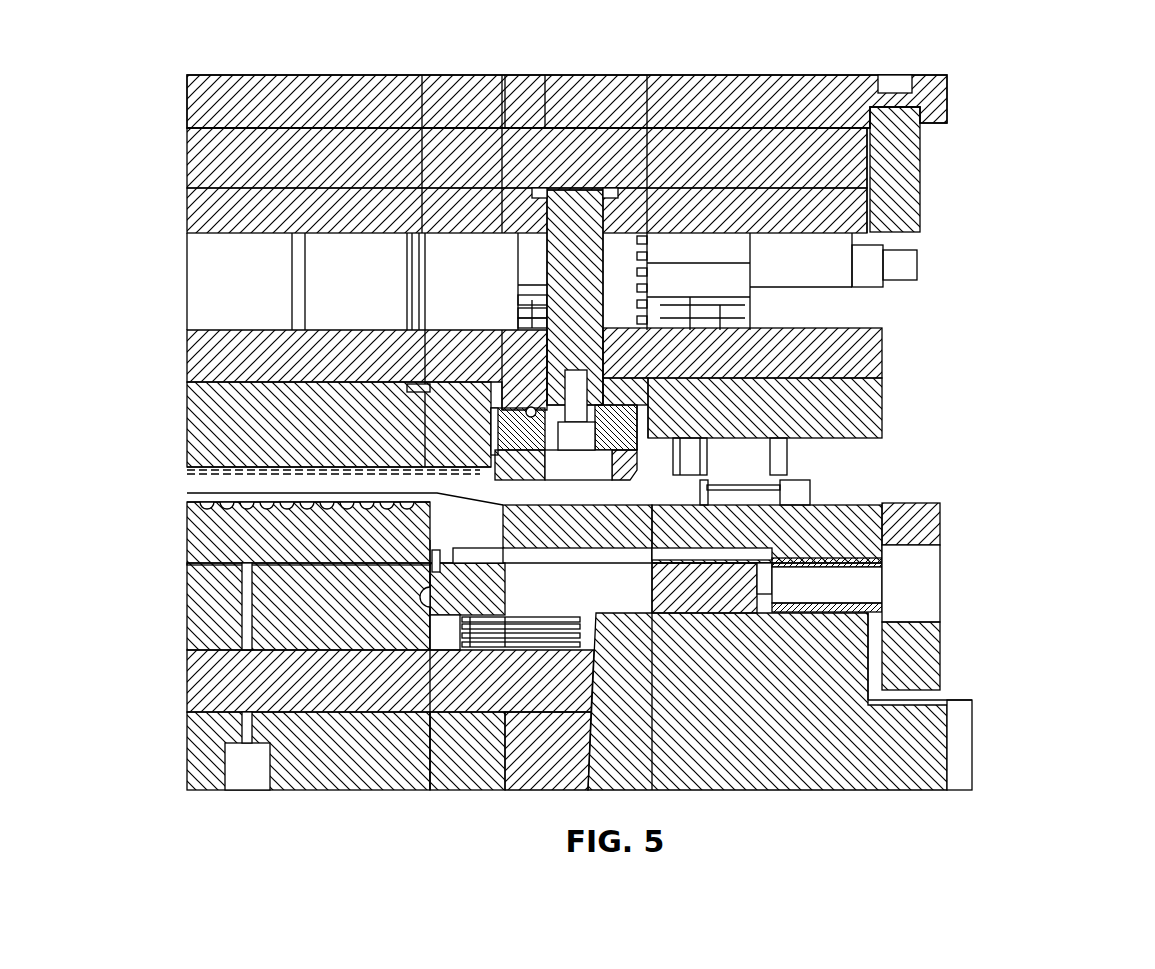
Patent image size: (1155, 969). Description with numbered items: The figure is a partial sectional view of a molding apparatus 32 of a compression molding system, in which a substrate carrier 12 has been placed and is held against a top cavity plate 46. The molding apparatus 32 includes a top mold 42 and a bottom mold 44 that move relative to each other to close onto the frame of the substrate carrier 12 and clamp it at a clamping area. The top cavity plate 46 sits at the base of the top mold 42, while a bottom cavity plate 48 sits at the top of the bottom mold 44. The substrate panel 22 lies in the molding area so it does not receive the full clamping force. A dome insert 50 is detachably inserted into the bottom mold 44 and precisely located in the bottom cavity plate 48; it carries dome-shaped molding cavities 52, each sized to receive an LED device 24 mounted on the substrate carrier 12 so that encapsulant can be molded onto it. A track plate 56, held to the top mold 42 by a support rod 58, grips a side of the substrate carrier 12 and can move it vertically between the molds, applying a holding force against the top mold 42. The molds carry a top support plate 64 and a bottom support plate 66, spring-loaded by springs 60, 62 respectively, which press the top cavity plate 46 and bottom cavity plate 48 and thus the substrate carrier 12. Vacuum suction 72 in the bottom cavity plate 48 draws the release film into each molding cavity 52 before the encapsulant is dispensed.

The molding apparatus 32 is at (601, 423).
The top mold 42 is at (592, 290).
The bottom mold 44 is at (602, 674).
The support rod 58 is at (603, 250).
The spring 60 is at (524, 299).
The top support plate 64 is at (848, 340).
The top cavity plate 46 is at (873, 403).
The track plate 56 is at (618, 472).
The substrate carrier 12 is at (445, 460).
The substrate panel 22 is at (283, 462).
The LED device 24 is at (210, 478).
The bottom cavity plate 48 is at (873, 519).
The vacuum suction 72 is at (850, 588).
The molding cavity 52 is at (208, 517).
The dome insert 50 is at (240, 532).
The bottom support plate 66 is at (228, 613).
The spring 62 is at (480, 650).